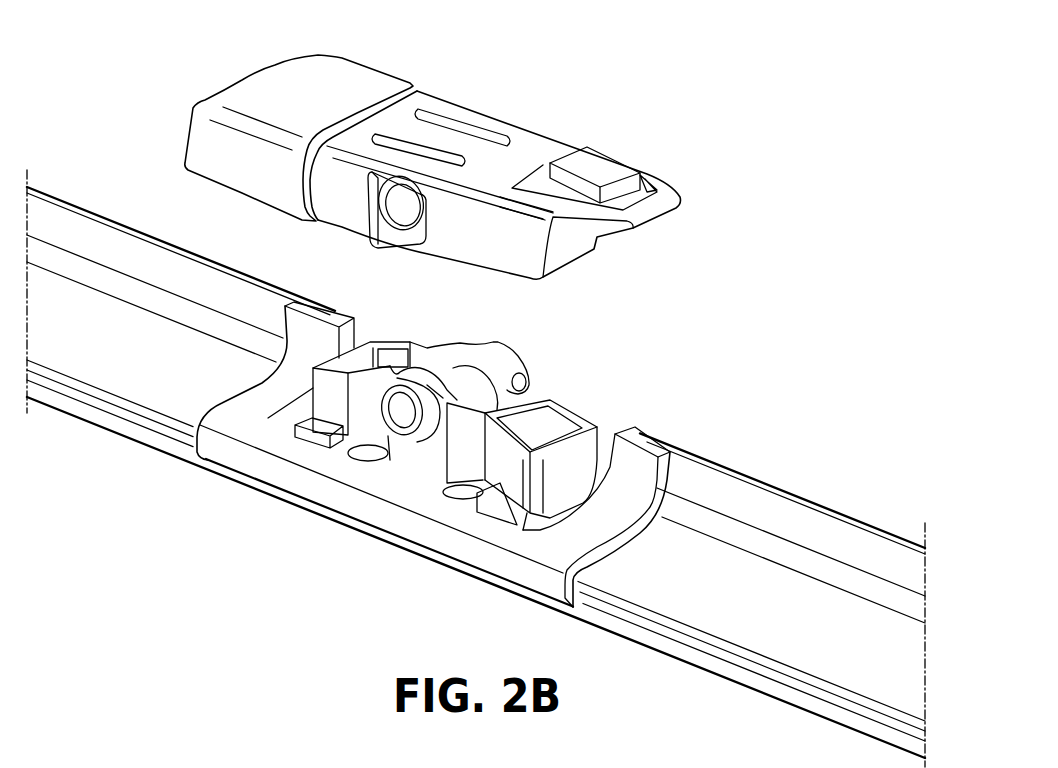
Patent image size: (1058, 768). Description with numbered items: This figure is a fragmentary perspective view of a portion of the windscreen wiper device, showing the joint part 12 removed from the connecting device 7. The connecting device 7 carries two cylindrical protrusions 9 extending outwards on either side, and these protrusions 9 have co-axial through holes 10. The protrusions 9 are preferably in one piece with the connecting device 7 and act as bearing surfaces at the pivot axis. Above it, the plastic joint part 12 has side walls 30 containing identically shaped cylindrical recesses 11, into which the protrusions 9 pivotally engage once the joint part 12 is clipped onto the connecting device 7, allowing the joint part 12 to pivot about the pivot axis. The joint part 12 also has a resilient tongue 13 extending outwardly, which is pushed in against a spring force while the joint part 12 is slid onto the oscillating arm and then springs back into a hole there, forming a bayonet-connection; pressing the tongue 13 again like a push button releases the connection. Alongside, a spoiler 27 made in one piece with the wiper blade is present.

The connecting device 7 is at (625, 363).
The cylindrical protrusions 9 is at (510, 348).
The co-axial through holes 10 is at (398, 412).
The cylindrical recesses 11 is at (407, 203).
The joint part 12 is at (271, 92).
The resilient tongue 13 is at (598, 162).
The spoiler 27 is at (86, 238).
The side walls 30 is at (473, 233).